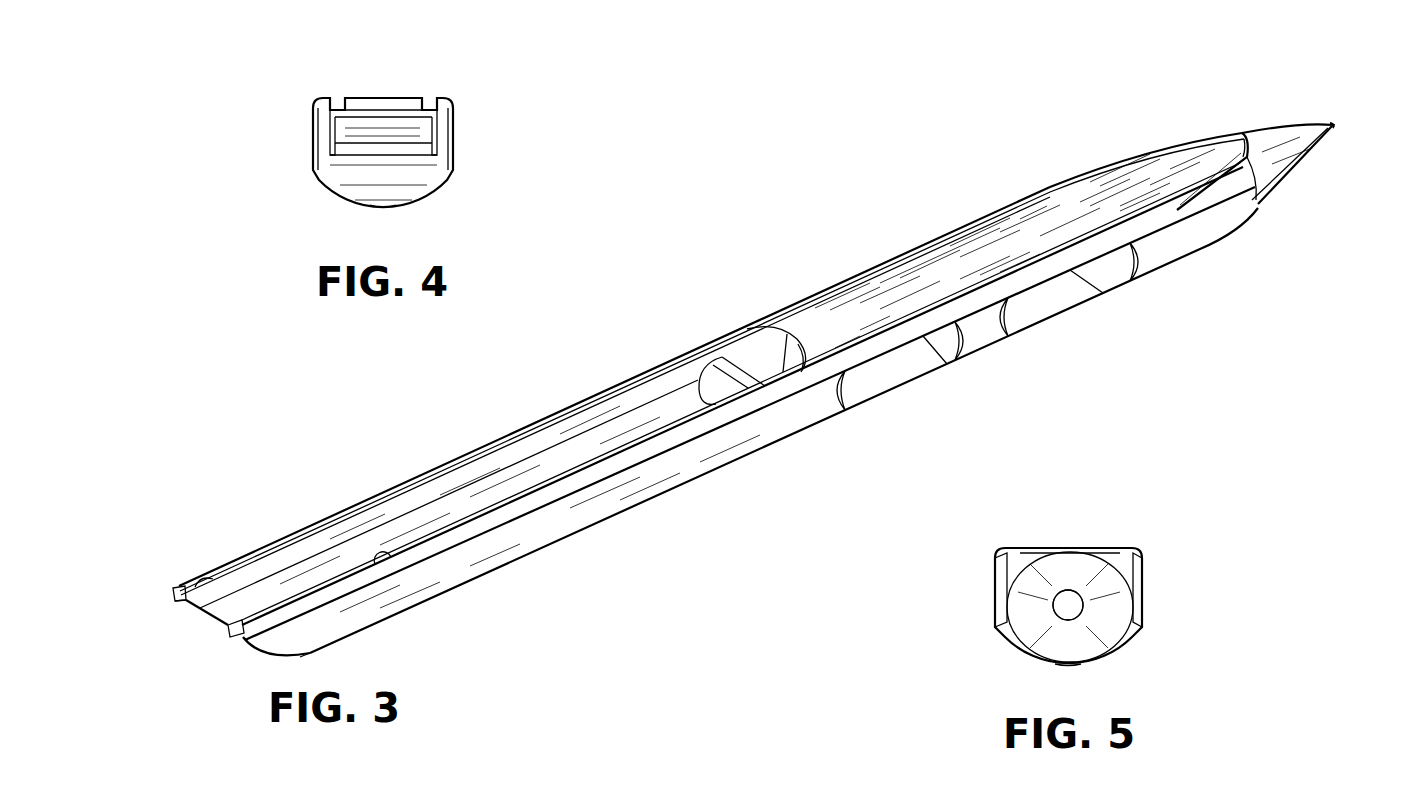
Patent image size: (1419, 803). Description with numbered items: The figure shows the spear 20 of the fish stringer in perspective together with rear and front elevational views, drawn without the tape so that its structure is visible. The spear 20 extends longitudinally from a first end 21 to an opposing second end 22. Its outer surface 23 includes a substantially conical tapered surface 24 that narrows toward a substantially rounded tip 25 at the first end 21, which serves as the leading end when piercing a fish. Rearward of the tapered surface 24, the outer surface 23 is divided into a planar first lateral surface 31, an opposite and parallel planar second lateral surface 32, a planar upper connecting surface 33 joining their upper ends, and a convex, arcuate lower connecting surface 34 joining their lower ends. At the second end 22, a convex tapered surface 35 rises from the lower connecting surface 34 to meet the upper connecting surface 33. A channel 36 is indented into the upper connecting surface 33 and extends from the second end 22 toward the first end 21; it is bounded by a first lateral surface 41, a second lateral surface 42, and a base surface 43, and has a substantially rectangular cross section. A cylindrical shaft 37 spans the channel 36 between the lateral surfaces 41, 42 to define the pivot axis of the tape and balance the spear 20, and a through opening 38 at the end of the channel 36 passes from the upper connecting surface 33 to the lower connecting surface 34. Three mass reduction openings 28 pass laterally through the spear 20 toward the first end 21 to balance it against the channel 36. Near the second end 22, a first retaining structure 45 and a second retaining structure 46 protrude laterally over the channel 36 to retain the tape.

In FIG. 3, the spear 20 is at (1160, 139).
In FIG. 4, the spear 20 is at (474, 92).
In FIG. 5, the spear 20 is at (1146, 544).
In FIG. 3, the first end 21 is at (1336, 127).
In FIG. 5, the first end 21 is at (1075, 608).
In FIG. 3, the second end 22 is at (172, 594).
In FIG. 3, the outer surface 23 is at (1010, 245).
In FIG. 3, the tapered surface 24 is at (1290, 167).
In FIG. 4, the tapered surface 24 is at (342, 178).
In FIG. 5, the tapered surface 24 is at (1030, 630).
In FIG. 3, the tip 25 is at (1367, 155).
In FIG. 5, the tip 25 is at (1123, 636).
In FIG. 3, the mass reduction openings 28 is at (892, 365).
In FIG. 3, the first lateral surface 31 is at (596, 392).
In FIG. 4, the first lateral surface 31 is at (311, 146).
In FIG. 5, the first lateral surface 31 is at (1145, 600).
In FIG. 3, the second lateral surface 32 is at (690, 456).
In FIG. 4, the second lateral surface 32 is at (456, 156).
In FIG. 5, the second lateral surface 32 is at (993, 592).
In FIG. 3, the upper connecting surface 33 is at (870, 300).
In FIG. 4, the upper connecting surface 33 is at (366, 95).
In FIG. 5, the upper connecting surface 33 is at (1058, 548).
In FIG. 3, the lower connecting surface 34 is at (667, 495).
In FIG. 4, the lower connecting surface 34 is at (380, 205).
In FIG. 5, the lower connecting surface 34 is at (1075, 665).
In FIG. 3, the tapered surface 35 is at (203, 616).
In FIG. 3, the channel 36 is at (450, 522).
In FIG. 4, the channel 36 is at (377, 141).
In FIG. 3, the shaft 37 is at (716, 368).
In FIG. 4, the shaft 37 is at (394, 139).
In FIG. 3, the through opening 38 is at (752, 358).
In FIG. 3, the first lateral surface of the channel 41 is at (345, 528).
In FIG. 4, the first lateral surface of the channel 41 is at (334, 133).
In FIG. 3, the second lateral surface of the channel 42 is at (395, 560).
In FIG. 4, the second lateral surface of the channel 42 is at (432, 131).
In FIG. 3, the base surface 43 is at (396, 540).
In FIG. 4, the base surface 43 is at (402, 135).
In FIG. 3, the first retaining structure 45 is at (200, 582).
In FIG. 4, the first retaining structure 45 is at (336, 97).
In FIG. 3, the second retaining structure 46 is at (243, 628).
In FIG. 4, the second retaining structure 46 is at (434, 97).